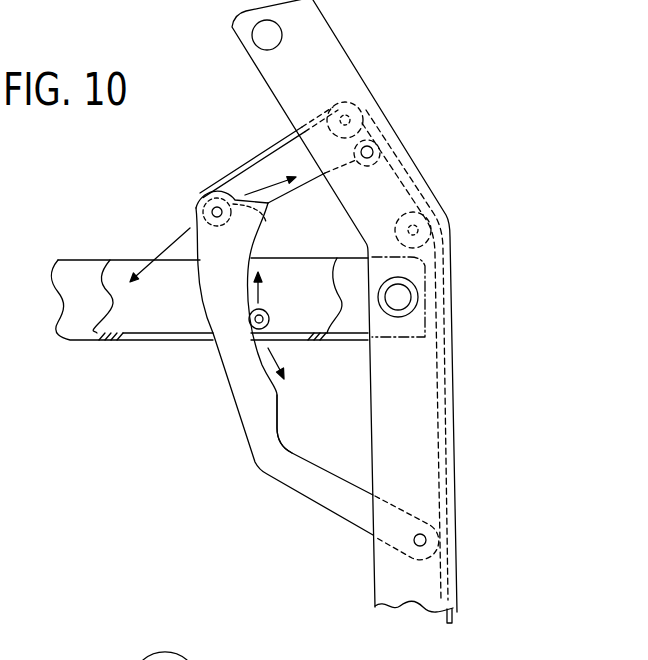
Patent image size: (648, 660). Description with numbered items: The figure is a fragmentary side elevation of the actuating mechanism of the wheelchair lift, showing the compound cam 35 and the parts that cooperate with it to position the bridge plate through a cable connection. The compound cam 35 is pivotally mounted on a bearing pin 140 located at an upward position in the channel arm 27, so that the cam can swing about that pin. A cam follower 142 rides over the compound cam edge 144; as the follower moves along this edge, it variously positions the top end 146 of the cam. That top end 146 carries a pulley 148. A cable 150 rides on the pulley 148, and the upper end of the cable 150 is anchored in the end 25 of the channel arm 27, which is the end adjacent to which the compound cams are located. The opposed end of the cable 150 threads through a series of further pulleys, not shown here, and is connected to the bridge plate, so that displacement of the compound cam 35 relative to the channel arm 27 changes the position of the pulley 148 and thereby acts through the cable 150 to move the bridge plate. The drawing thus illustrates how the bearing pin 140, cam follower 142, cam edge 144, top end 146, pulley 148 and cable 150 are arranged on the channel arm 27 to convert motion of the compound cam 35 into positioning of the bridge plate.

The end 25 is at (347, 56).
The channel arm 27 is at (388, 577).
The compound cam 35 is at (241, 417).
The bearing pin 140 is at (413, 539).
The cam follower 142 is at (268, 315).
The compound cam edge 144 is at (277, 421).
The top end 146 is at (270, 215).
The pulley 148 is at (198, 200).
The cable 150 is at (258, 154).